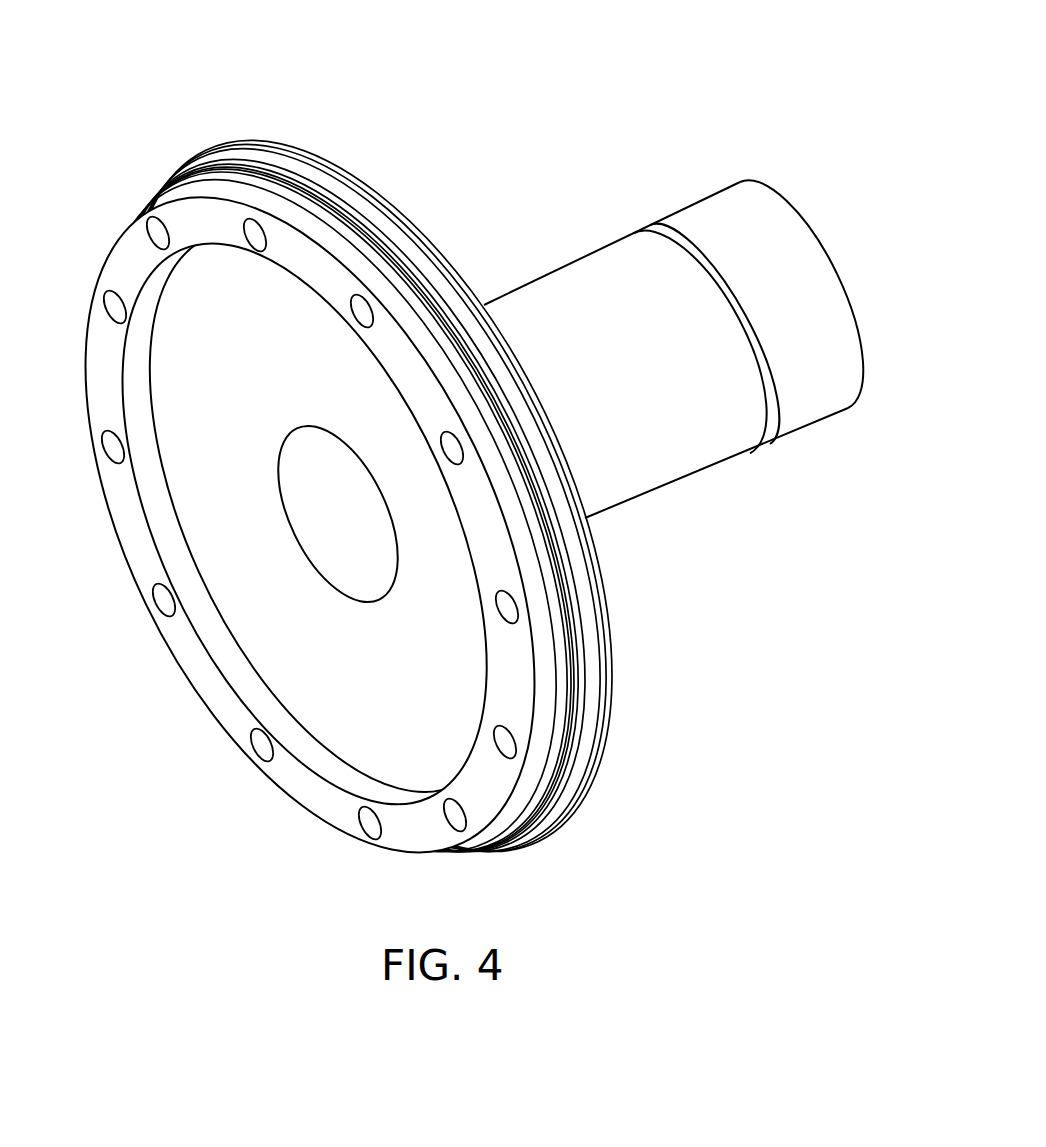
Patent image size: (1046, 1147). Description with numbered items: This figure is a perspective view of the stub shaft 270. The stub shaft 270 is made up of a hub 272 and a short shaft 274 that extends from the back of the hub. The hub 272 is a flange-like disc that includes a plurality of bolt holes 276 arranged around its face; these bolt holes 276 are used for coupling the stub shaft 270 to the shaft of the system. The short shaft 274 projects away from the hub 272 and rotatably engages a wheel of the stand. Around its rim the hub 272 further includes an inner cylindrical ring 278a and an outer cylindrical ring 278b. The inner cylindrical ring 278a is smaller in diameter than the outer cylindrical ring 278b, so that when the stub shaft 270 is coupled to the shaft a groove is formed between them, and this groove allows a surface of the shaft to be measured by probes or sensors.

The stub shaft 270 is at (660, 83).
The hub 272 is at (362, 672).
The short shaft 274 is at (558, 270).
The bolt holes 276 is at (103, 308).
The inner cylindrical ring 278a is at (283, 182).
The outer cylindrical ring 278b is at (398, 227).